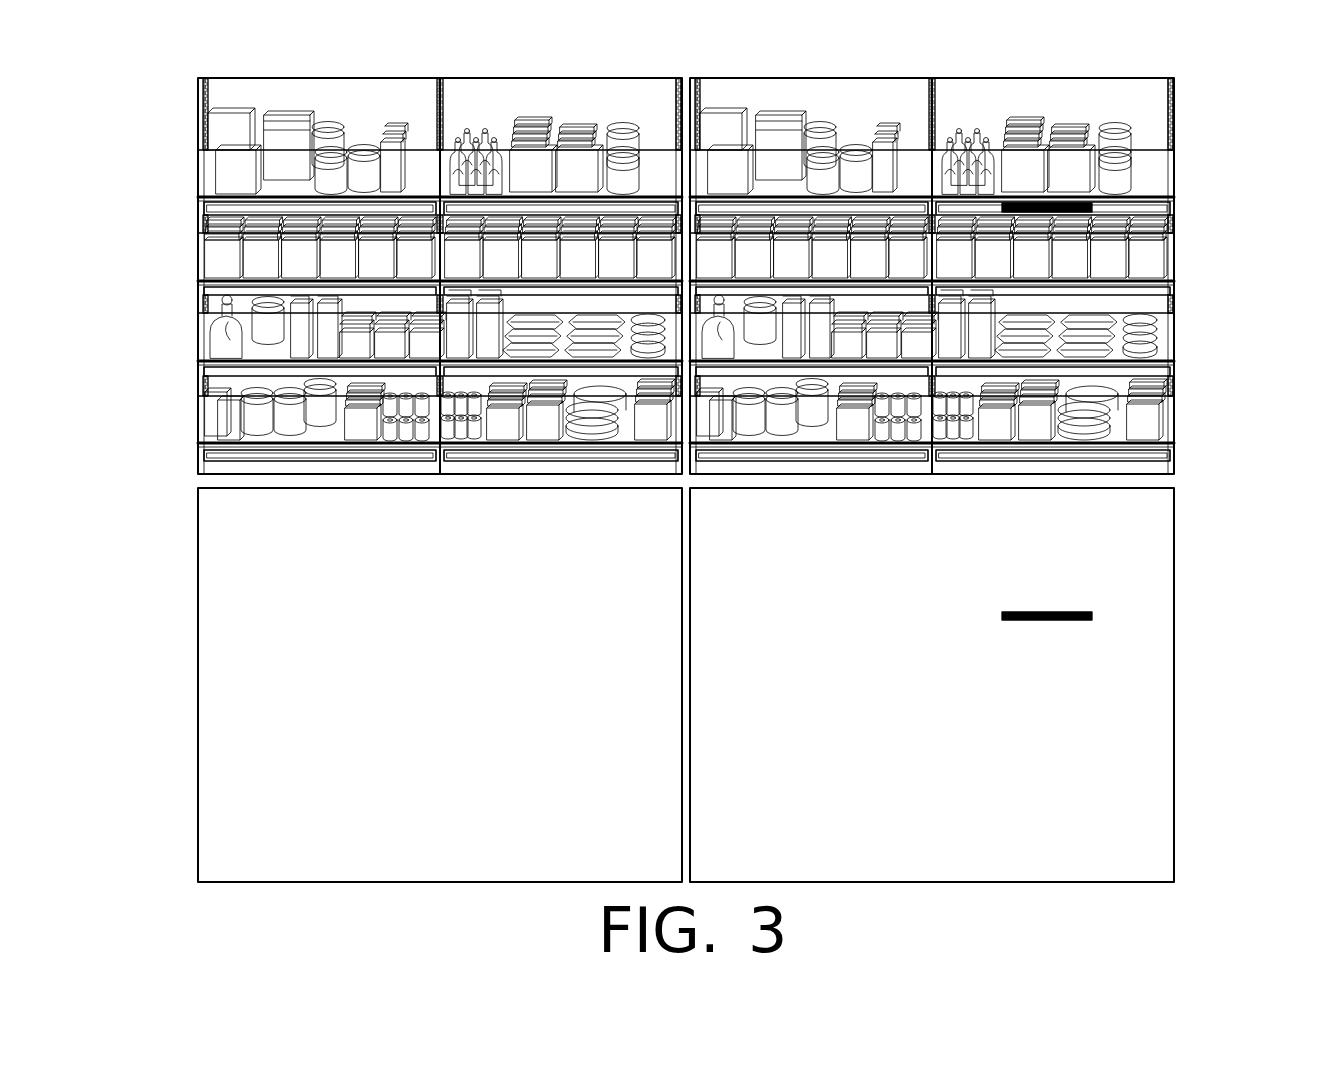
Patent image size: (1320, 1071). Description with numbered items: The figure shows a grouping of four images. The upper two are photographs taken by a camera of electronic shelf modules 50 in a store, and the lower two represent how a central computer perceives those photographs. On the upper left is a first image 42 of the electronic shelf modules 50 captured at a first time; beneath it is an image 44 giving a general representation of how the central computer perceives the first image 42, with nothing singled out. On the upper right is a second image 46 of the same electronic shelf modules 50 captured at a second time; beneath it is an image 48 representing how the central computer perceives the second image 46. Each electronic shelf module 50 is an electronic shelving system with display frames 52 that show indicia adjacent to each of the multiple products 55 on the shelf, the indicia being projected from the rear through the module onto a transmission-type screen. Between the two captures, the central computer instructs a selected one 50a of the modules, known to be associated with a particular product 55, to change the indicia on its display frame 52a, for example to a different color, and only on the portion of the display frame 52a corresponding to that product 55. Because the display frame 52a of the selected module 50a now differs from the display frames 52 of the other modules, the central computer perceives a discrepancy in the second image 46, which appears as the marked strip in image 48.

The first image 42 is at (394, 253).
The image representing perception of first image 44 is at (198, 695).
The second image 46 is at (1001, 252).
The image representing perception of second image 48 is at (1174, 713).
The electronic shelf module 50 is at (417, 160).
The selected electronic shelf module 50a is at (1147, 170).
The display frame 52 is at (208, 207).
The display frame of selected module 52a is at (1092, 207).
The product 55 is at (723, 155).